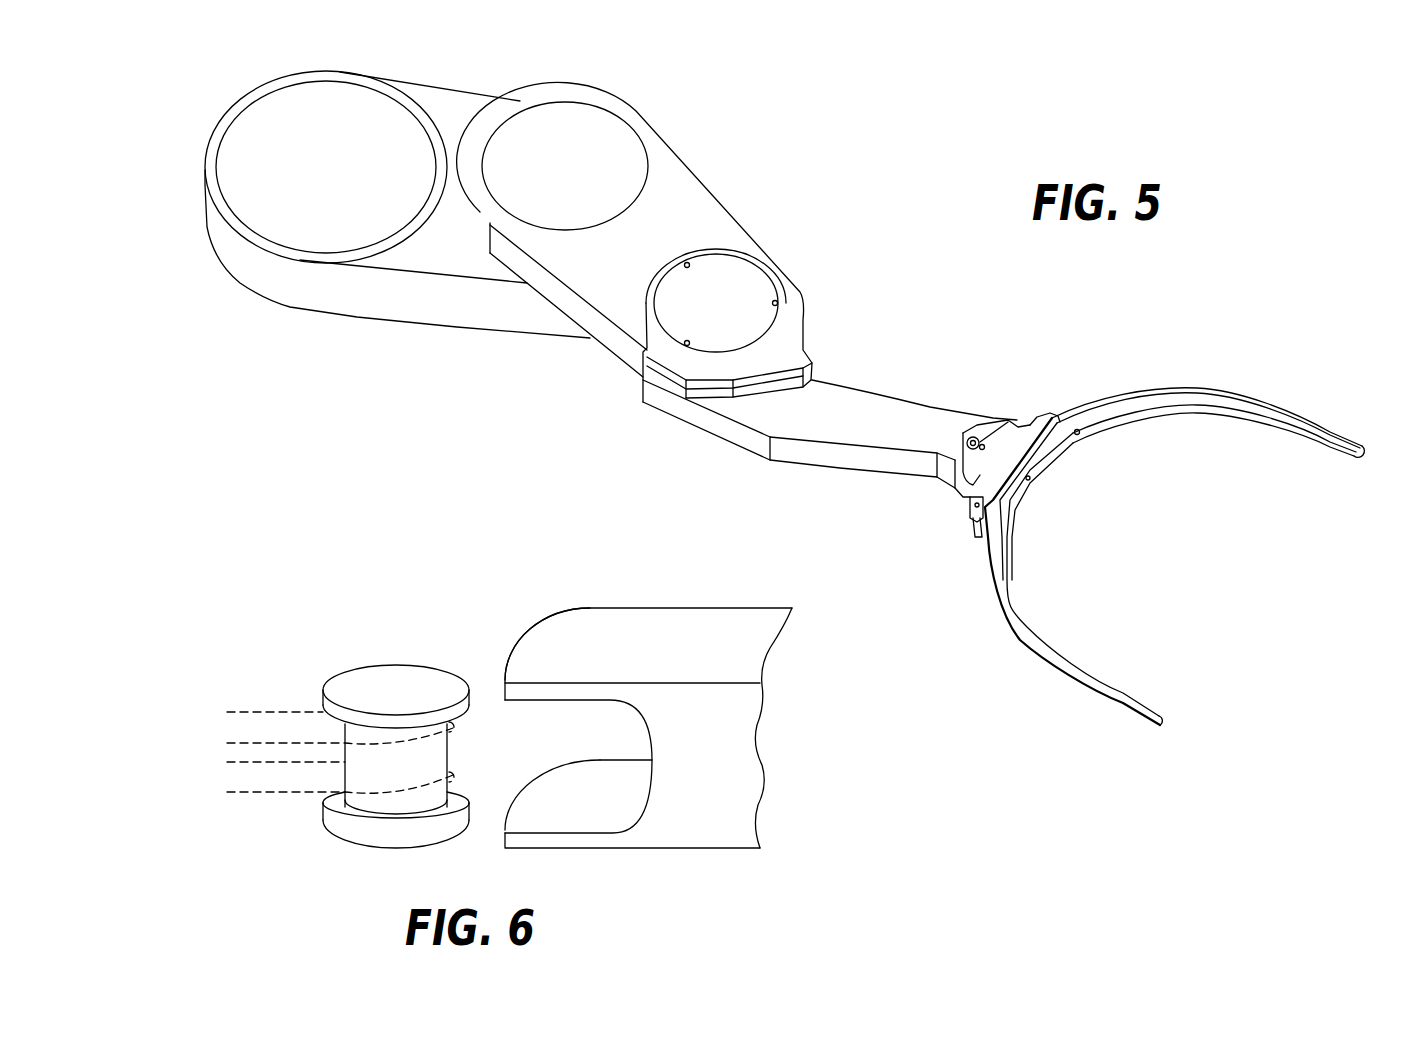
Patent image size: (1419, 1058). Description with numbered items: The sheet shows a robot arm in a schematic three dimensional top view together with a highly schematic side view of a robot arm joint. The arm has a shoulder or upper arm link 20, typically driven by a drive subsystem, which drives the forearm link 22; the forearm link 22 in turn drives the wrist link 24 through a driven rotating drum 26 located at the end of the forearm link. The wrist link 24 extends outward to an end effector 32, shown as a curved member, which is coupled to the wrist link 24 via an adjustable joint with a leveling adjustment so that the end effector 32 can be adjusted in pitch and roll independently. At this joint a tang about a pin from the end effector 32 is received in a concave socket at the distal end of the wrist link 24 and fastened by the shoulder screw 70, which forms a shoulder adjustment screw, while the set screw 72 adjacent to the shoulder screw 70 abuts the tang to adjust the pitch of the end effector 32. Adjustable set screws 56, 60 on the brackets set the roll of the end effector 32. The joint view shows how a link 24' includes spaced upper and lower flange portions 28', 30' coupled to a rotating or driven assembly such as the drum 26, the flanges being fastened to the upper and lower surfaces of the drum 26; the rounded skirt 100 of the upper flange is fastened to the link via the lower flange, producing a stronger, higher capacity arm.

In FIG. 5, the shoulder link 20 is at (460, 107).
In FIG. 5, the forearm link 22 is at (700, 190).
In FIG. 5, the wrist link 24 is at (830, 408).
In FIG. 5, the shoulder screw 70 is at (969, 437).
In FIG. 5, the set screw 72 is at (986, 443).
In FIG. 5, the adjustable set screw 60 is at (1052, 412).
In FIG. 5, the adjustable set screw 56 is at (985, 513).
In FIG. 5, the end effector 32 is at (1289, 401).
In FIG. 6, the rotating drum 26 is at (371, 677).
In FIG. 6, the link 24' is at (648, 703).
In FIG. 6, the upper flange portion 28' is at (547, 620).
In FIG. 6, the lower flange portion 30' is at (541, 782).
In FIG. 6, the skirt 100 is at (648, 737).